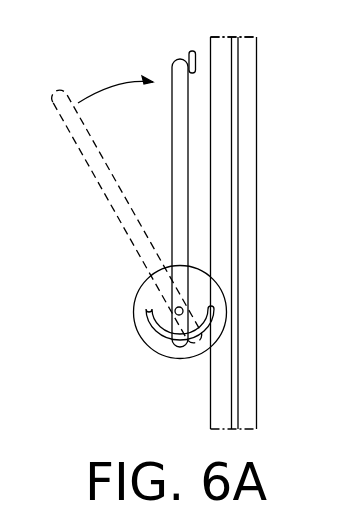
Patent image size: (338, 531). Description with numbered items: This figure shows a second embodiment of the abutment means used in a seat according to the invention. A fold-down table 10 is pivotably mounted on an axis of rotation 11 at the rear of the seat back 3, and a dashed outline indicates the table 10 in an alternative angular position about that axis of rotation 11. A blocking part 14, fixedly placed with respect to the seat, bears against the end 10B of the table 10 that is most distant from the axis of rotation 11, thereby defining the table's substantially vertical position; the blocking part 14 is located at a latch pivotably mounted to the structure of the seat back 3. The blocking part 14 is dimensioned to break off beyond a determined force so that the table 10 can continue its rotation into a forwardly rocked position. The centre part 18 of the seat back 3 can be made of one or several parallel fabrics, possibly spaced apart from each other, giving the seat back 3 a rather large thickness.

The seat back 3 is at (98, 70).
The table 10 is at (180, 148).
The end of the table 10B is at (173, 63).
The axis of rotation 11 is at (175, 310).
The blocking part 14 is at (208, 38).
The centre part of the seat back 18 is at (236, 137).